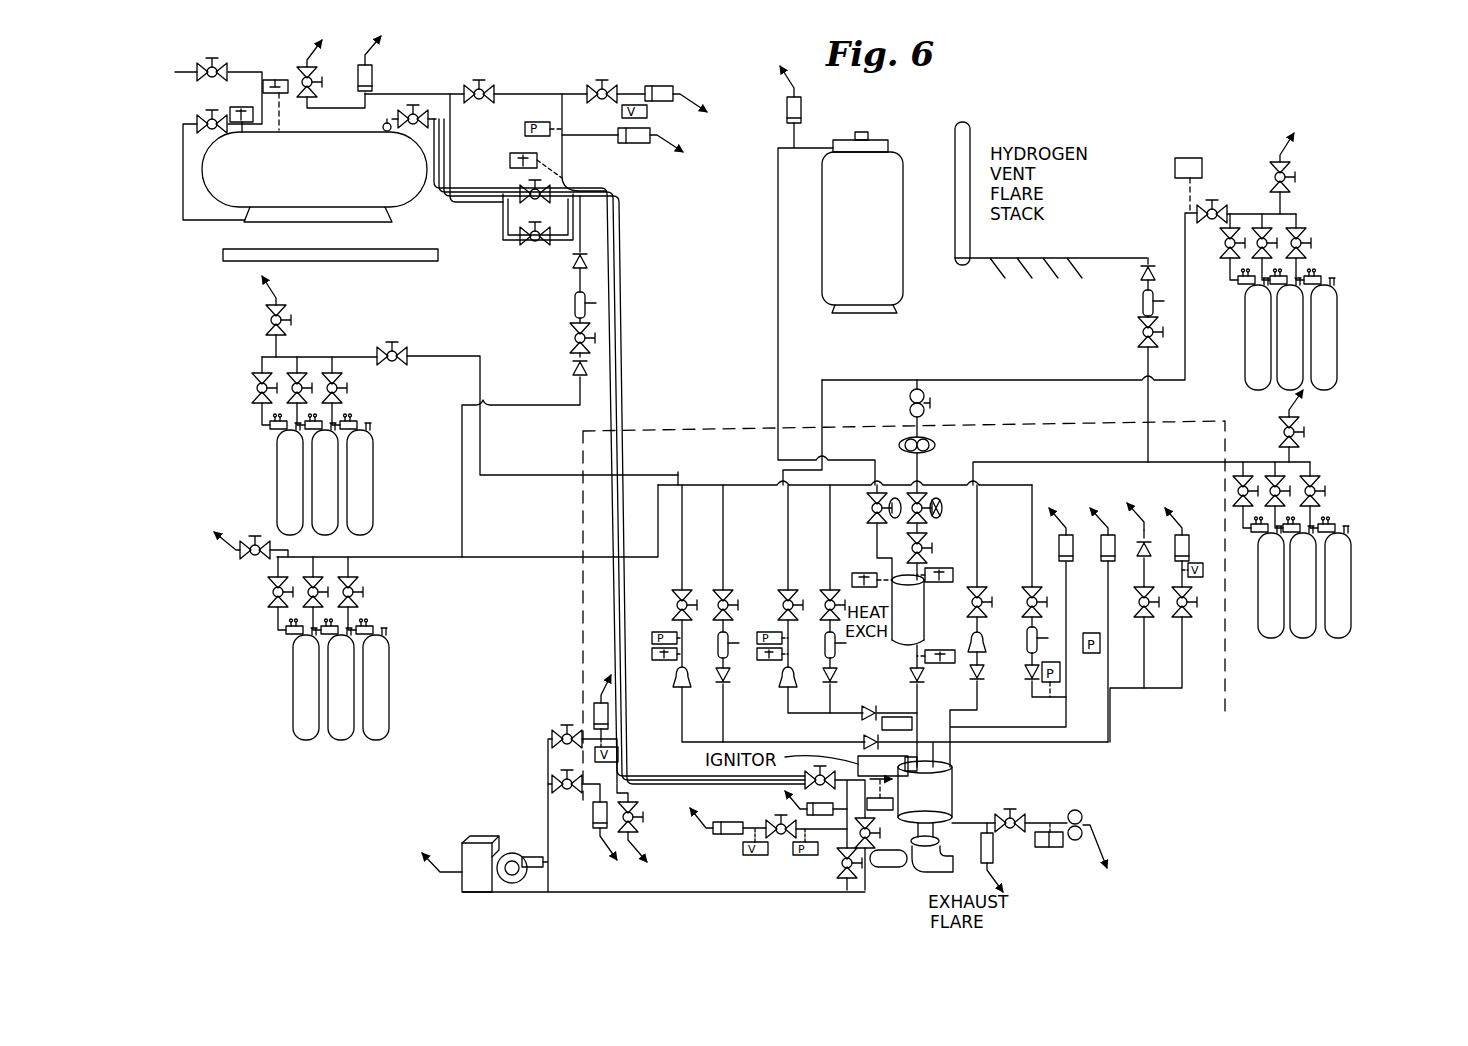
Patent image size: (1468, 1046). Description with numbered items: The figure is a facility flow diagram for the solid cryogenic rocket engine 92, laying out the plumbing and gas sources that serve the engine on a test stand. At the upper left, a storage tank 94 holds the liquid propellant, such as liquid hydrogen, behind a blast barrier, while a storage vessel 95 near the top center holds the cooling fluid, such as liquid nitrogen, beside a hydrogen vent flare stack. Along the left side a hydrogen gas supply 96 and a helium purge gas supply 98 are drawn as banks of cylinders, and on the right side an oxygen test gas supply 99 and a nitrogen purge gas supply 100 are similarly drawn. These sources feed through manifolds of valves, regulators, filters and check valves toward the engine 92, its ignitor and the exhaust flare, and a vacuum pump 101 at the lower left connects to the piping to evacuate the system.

The engine 92 is at (904, 814).
The storage tank 94 is at (370, 147).
The storage vessel 95 is at (899, 170).
The hydrogen gas supply 96 is at (283, 452).
The helium purge gas supply 98 is at (300, 687).
The oxygen test gas supply 99 is at (1332, 312).
The nitrogen purge gas supply 100 is at (1345, 586).
The vacuum pump 101 is at (472, 850).